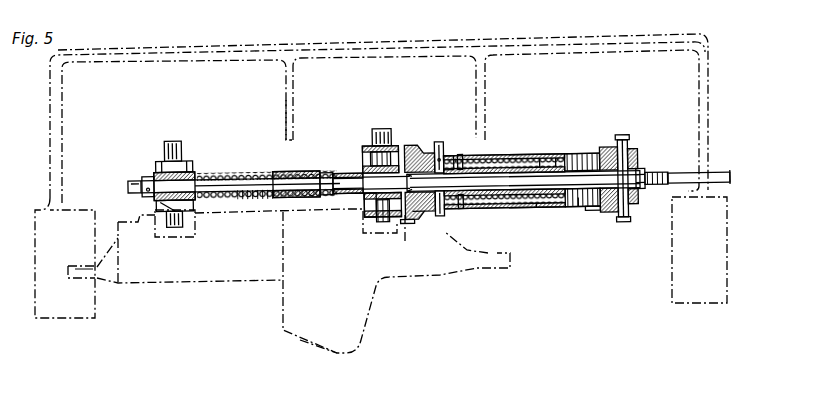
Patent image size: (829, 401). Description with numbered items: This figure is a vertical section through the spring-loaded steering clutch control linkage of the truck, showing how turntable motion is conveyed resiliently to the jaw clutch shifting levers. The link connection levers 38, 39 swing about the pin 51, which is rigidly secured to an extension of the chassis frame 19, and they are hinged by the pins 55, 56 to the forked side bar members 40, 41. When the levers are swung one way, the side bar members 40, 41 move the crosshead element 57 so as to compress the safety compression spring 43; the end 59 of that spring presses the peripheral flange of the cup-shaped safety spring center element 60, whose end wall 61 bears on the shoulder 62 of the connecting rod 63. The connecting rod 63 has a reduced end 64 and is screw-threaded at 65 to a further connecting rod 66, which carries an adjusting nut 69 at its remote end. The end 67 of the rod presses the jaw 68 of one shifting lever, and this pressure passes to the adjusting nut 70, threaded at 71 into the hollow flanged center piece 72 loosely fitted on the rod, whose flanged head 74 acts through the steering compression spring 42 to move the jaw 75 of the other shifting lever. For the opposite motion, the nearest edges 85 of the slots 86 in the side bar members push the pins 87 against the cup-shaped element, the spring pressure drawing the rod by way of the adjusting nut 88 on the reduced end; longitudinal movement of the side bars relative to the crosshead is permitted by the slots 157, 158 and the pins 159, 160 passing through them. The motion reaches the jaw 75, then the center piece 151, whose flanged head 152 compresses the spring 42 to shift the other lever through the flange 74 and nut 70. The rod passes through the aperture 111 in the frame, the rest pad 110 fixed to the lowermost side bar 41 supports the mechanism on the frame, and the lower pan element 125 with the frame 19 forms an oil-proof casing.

The chassis frame 19 is at (290, 78).
The link connection lever 38 is at (364, 163).
The link connection lever 39 is at (368, 209).
The forked side bar member 40 is at (505, 164).
The forked side bar member 41 is at (490, 221).
The steering compression spring 42 is at (247, 206).
The safety compression spring 43 is at (556, 167).
The pin 51 is at (385, 137).
The pin 55 is at (380, 156).
The pin 56 is at (376, 217).
The crosshead element 57 is at (638, 174).
The end of spring 59 is at (455, 166).
The cup-shaped safety spring center element 60 is at (540, 167).
The end wall of center element 61 is at (580, 170).
The shoulder of connecting rod 62 is at (536, 215).
The connecting rod 63 is at (523, 181).
The reduced end of connecting rod 64 is at (578, 213).
The screw-threaded end 65 is at (420, 219).
The connecting rod 66 is at (252, 186).
The end of connecting rod 67 is at (413, 157).
The jaw of clutch shifting lever 68 is at (382, 226).
The adjusting nut 69 is at (142, 192).
The adjusting nut 70 is at (355, 201).
The screw threads 71 is at (339, 180).
The hollow flanged center piece 72 is at (290, 177).
The flanged head 74 is at (322, 182).
The jaw of clutch shifting lever 75 is at (148, 176).
The edges of slots 85 is at (470, 166).
The slots 86 is at (465, 161).
The pins 87 is at (440, 165).
The adjusting nut 88 is at (637, 200).
The rest pad 110 is at (407, 228).
The aperture 111 is at (722, 182).
The lower pan element 125 is at (325, 332).
The center piece 151 is at (190, 208).
The flanged head 152 is at (183, 163).
The slot 157 is at (612, 151).
The slot 158 is at (598, 219).
The pin 159 is at (628, 153).
The pin 160 is at (628, 222).